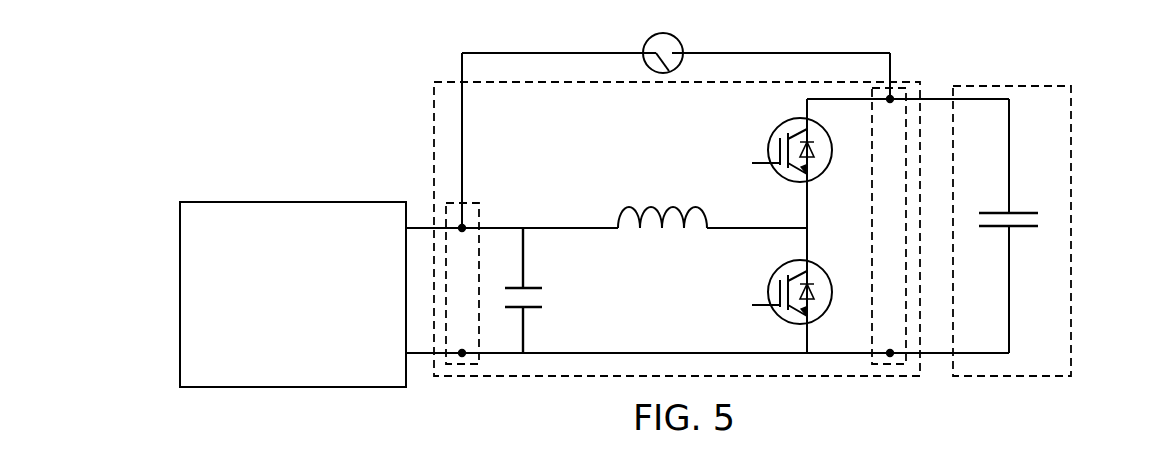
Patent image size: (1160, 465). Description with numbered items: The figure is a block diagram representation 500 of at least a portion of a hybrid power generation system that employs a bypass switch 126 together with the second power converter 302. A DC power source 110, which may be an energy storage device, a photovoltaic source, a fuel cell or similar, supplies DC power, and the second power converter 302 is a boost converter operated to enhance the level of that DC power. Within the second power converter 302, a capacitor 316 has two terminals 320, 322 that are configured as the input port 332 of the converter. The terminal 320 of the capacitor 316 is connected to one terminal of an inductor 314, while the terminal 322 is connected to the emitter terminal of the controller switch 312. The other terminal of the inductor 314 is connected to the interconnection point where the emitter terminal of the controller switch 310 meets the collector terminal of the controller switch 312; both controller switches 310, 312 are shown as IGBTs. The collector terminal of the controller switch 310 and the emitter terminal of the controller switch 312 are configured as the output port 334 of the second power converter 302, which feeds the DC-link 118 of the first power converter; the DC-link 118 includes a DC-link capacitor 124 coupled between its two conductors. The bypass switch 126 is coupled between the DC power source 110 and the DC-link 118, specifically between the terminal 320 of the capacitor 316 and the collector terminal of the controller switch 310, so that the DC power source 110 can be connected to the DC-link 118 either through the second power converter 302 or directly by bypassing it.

The block diagram representation 500 is at (290, 43).
The DC power source 110 is at (254, 201).
The second power converter 302 is at (433, 113).
The input port 332 is at (472, 201).
The output port 334 is at (897, 88).
The DC-link 118 is at (1073, 153).
The DC-link capacitor 124 is at (1021, 210).
The capacitor 316 is at (538, 286).
The terminal 320 is at (506, 227).
The terminal 322 is at (525, 340).
The inductor 314 is at (655, 205).
The controller switch 310 is at (768, 140).
The controller switch 312 is at (768, 288).
The bypass switch 126 is at (680, 42).